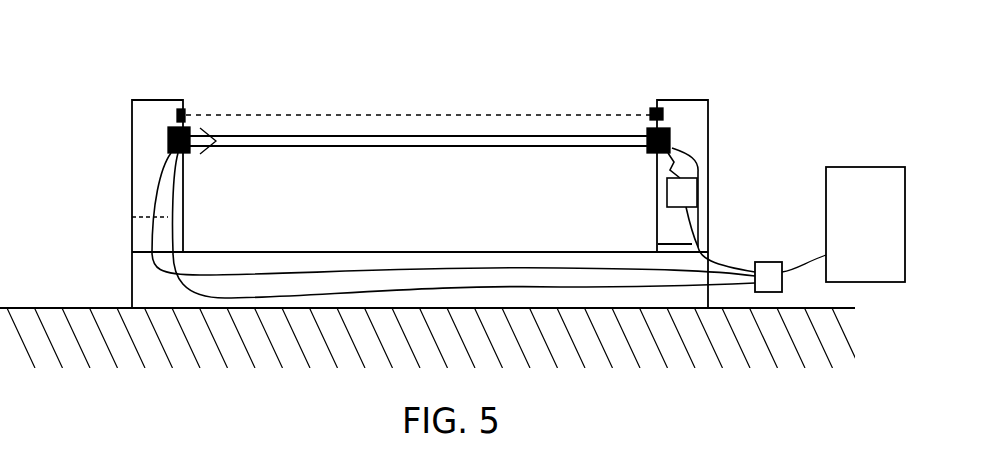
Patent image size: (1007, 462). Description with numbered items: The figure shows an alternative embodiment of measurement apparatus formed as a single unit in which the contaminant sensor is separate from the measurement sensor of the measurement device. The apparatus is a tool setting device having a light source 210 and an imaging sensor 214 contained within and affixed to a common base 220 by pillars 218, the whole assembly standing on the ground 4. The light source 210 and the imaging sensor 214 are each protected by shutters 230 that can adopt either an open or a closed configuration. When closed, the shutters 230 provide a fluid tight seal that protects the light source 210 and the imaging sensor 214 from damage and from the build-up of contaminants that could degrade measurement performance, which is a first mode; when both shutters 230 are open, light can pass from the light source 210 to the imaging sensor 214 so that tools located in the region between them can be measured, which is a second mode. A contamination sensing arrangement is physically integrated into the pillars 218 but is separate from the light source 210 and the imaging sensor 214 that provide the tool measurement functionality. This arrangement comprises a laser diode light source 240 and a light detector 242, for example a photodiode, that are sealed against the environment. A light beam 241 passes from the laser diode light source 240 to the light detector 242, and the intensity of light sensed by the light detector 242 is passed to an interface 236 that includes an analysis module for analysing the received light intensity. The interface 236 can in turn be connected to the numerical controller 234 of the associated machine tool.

The ground 4 is at (459, 348).
The light source 210 is at (172, 127).
The imaging sensor 214 is at (662, 128).
The pillars 218 is at (132, 190).
The common base 220 is at (476, 298).
The shutters 230 is at (190, 155).
The numerical controller 234 is at (890, 231).
The interface 236 is at (768, 268).
The laser diode light source 240 is at (185, 112).
The light beam 241 is at (355, 113).
The light detector 242 is at (650, 110).